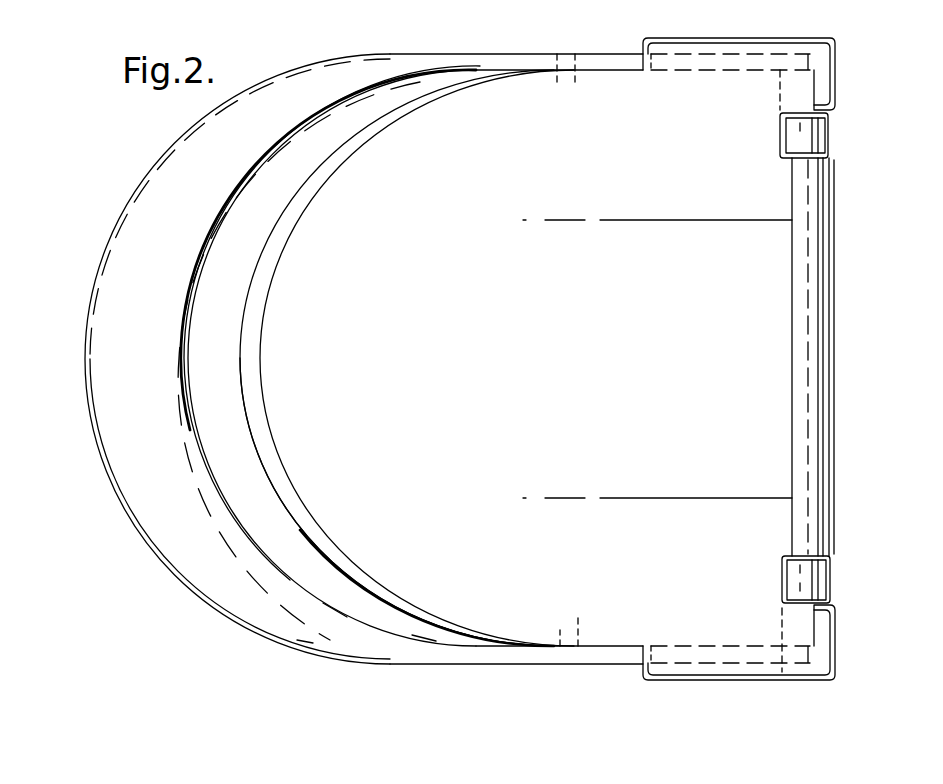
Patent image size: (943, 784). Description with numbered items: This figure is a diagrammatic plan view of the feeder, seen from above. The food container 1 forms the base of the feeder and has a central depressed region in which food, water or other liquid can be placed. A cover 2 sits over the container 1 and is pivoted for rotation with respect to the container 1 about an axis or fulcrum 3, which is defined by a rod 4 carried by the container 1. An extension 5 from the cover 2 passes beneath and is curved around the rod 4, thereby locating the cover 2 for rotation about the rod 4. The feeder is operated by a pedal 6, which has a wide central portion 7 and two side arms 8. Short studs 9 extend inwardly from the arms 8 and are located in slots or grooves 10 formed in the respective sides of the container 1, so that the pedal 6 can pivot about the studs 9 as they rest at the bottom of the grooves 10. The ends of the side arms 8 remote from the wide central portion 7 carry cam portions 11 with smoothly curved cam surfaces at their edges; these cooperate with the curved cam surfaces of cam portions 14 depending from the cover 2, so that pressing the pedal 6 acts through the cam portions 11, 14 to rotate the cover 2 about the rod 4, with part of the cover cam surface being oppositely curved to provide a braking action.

The food container 1 is at (330, 563).
The cover 2 is at (532, 334).
The axis or fulcrum 3 is at (803, 414).
The rod 4 is at (792, 188).
The extension 5 is at (827, 350).
The pedal 6 is at (236, 590).
The wide central portion 7 is at (153, 189).
The side arms 8 is at (627, 655).
The studs 9 is at (557, 83).
The slots or grooves 10 is at (575, 83).
The cam portions 11 is at (747, 60).
The cam portions 14 is at (657, 72).